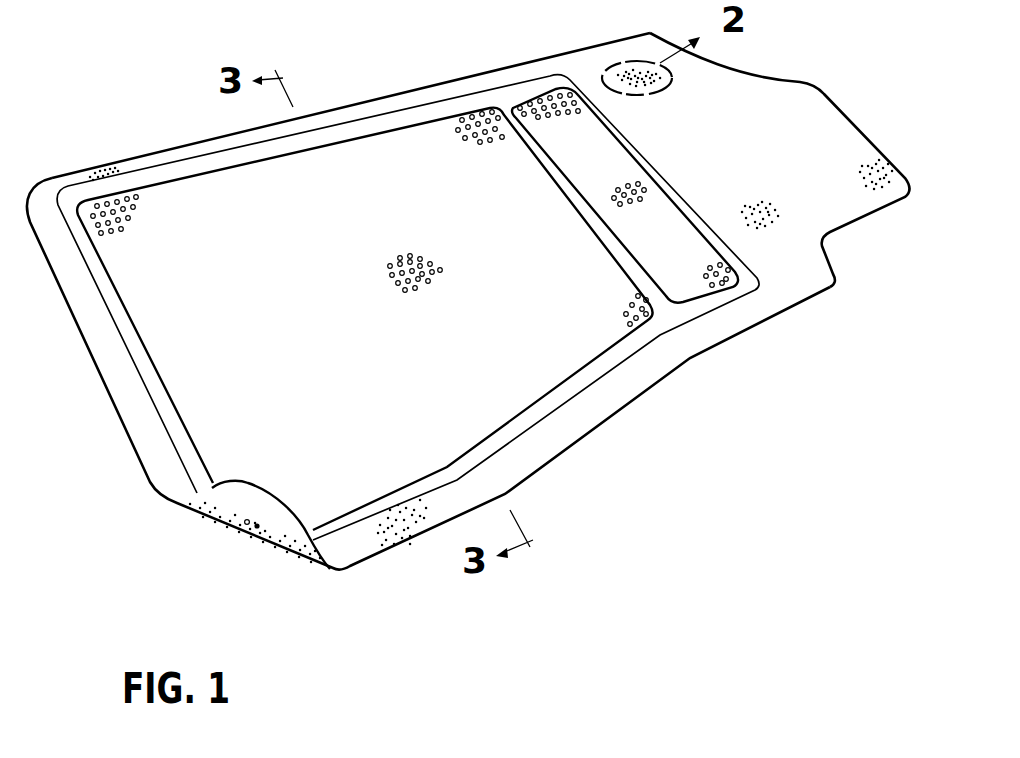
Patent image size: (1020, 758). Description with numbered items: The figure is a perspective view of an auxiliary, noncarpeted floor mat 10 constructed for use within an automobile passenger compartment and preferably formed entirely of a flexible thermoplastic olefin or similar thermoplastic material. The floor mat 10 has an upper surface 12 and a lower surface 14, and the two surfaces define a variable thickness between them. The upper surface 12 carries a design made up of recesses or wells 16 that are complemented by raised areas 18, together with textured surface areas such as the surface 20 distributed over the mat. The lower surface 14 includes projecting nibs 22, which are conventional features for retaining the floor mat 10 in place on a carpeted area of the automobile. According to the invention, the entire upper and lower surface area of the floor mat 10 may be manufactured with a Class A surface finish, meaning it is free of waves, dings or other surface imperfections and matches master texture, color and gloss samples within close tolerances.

The floor mat 10 is at (386, 96).
The upper surface 12 is at (778, 290).
The lower surface 14 is at (307, 562).
The recesses or wells 16 is at (588, 378).
The raised areas 18 is at (698, 272).
The textured surface 20 is at (634, 64).
The projecting nibs 22 is at (226, 535).